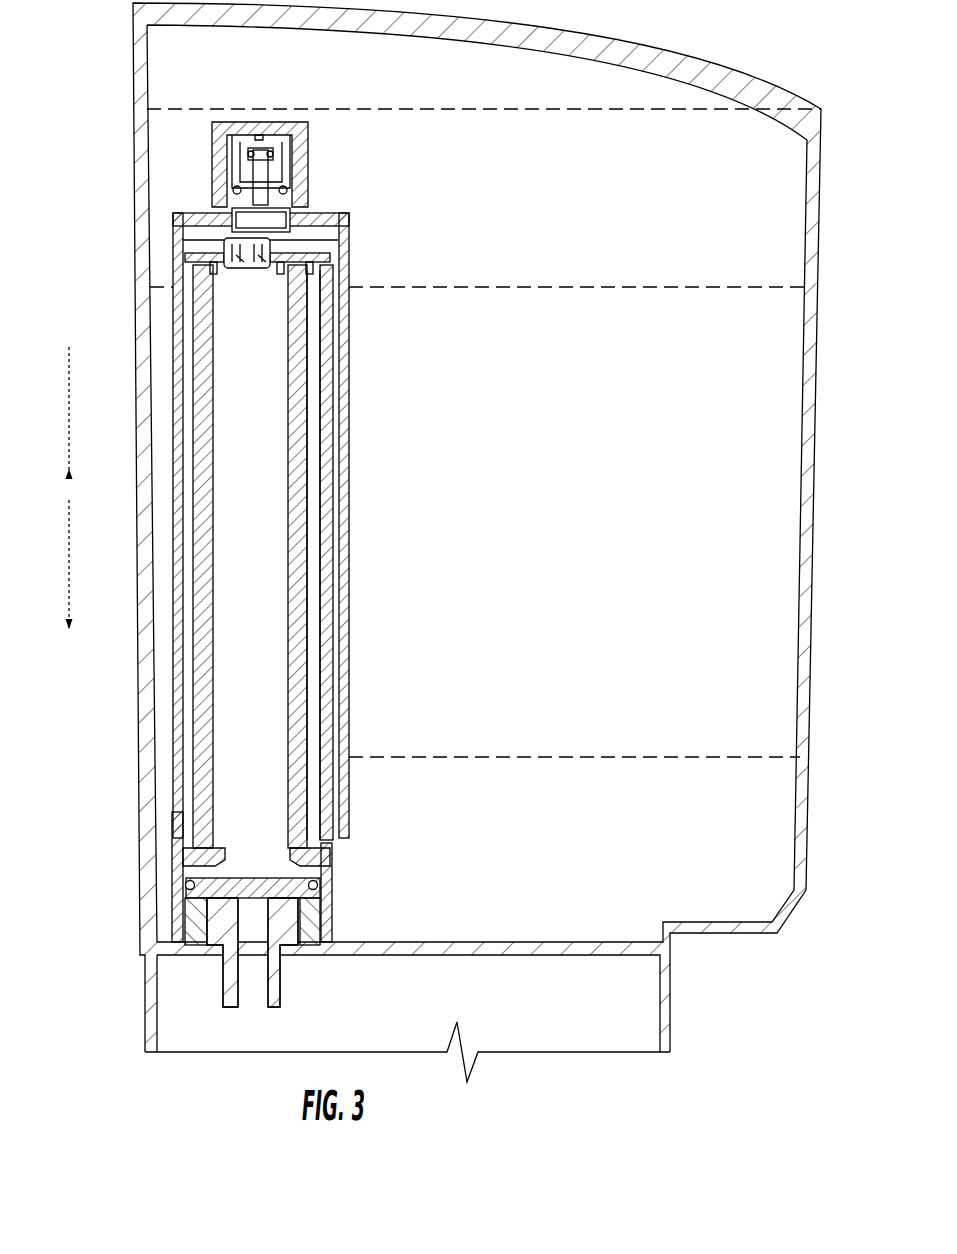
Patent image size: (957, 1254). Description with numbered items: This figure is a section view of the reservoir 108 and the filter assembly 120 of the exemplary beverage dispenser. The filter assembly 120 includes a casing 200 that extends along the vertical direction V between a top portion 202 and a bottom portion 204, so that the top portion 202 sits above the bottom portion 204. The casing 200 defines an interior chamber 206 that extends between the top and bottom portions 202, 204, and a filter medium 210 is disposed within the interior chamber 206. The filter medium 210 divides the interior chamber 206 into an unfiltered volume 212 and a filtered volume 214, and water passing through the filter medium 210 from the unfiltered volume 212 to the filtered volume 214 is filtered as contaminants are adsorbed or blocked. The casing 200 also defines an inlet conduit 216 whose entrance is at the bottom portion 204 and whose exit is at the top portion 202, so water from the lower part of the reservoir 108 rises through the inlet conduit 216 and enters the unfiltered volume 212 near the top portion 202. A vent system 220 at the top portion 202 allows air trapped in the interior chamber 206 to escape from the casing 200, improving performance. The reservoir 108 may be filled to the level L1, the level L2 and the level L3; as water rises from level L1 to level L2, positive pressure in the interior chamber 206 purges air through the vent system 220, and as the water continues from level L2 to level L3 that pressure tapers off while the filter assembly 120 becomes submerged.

The reservoir 108 is at (815, 310).
The filter assembly 120 is at (172, 200).
The casing 200 is at (346, 573).
The top portion 202 is at (363, 215).
The bottom portion 204 is at (359, 842).
The interior chamber 206 is at (253, 737).
The filter medium 210 is at (300, 460).
The unfiltered volume 212 is at (314, 360).
The filtered volume 214 is at (262, 395).
The inlet conduit 216 is at (338, 489).
The vent system 220 is at (312, 122).
The level L1 is at (606, 757).
The level L2 is at (634, 290).
The level L3 is at (609, 113).
The vertical direction V is at (68, 487).